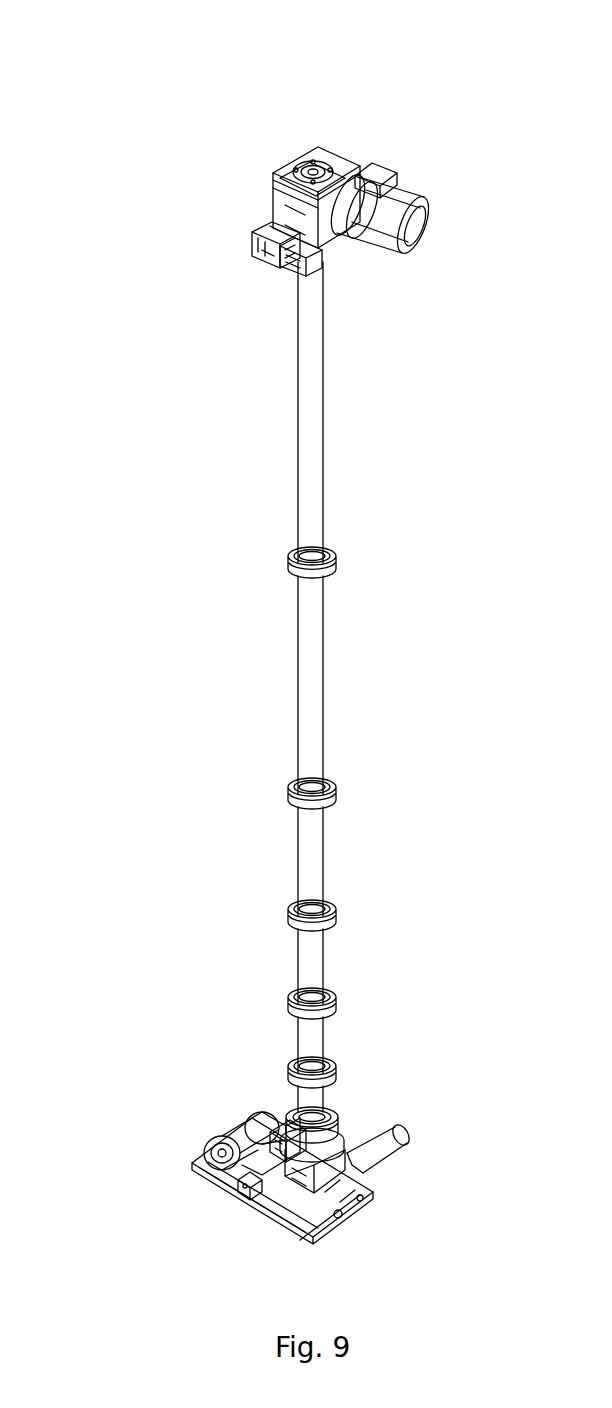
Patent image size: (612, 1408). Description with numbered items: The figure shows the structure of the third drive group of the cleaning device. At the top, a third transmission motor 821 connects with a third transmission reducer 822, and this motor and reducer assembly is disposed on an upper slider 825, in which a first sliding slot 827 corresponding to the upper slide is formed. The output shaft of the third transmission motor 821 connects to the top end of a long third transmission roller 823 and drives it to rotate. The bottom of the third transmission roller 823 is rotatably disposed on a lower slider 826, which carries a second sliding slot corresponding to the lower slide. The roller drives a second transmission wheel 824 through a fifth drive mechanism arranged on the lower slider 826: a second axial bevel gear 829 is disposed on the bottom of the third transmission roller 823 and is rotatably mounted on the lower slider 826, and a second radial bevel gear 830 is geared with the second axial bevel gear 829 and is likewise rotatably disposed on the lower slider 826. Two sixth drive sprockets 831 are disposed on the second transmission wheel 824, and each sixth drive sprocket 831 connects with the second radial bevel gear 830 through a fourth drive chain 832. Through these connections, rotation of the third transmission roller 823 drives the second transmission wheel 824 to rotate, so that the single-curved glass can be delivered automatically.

The third transmission motor 821 is at (430, 217).
The third transmission reducer 822 is at (323, 157).
The third transmission roller 823 is at (313, 462).
The second transmission wheel 824 is at (352, 1162).
The upper slider 825 is at (262, 238).
The lower slider 826 is at (200, 1177).
The first sliding slot 827 is at (275, 270).
The second axial bevel gear 829 is at (337, 1130).
The second radial bevel gear 830 is at (290, 1130).
The sixth drive sprocket 831 is at (227, 1132).
The fourth drive chain 832 is at (247, 1188).